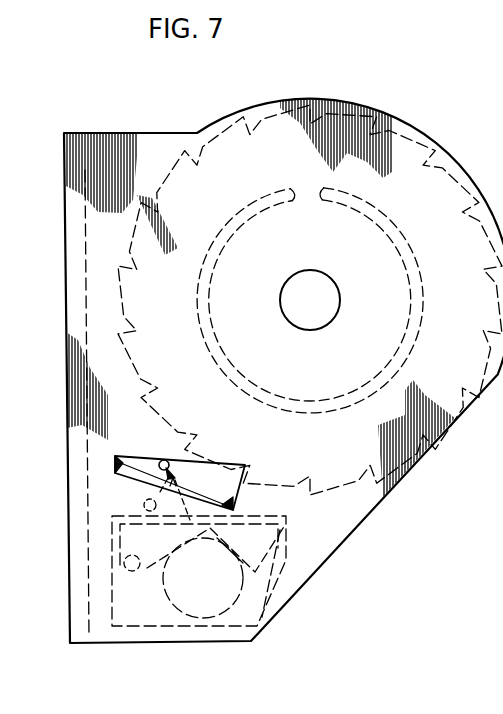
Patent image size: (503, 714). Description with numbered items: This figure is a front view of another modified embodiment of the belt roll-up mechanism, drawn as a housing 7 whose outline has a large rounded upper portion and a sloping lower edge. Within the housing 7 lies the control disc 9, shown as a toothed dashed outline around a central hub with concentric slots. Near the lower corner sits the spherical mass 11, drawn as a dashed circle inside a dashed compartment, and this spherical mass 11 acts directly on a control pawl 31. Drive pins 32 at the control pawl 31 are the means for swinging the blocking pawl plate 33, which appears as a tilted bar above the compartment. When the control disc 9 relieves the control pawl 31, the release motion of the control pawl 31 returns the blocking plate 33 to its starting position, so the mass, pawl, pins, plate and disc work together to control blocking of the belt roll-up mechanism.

The housing 7 is at (467, 173).
The control disc 9 is at (350, 478).
The spherical mass 11 is at (218, 610).
The control pawl 31 is at (283, 567).
The drive pins 32 is at (172, 467).
The blocking pawl plate 33 is at (115, 457).